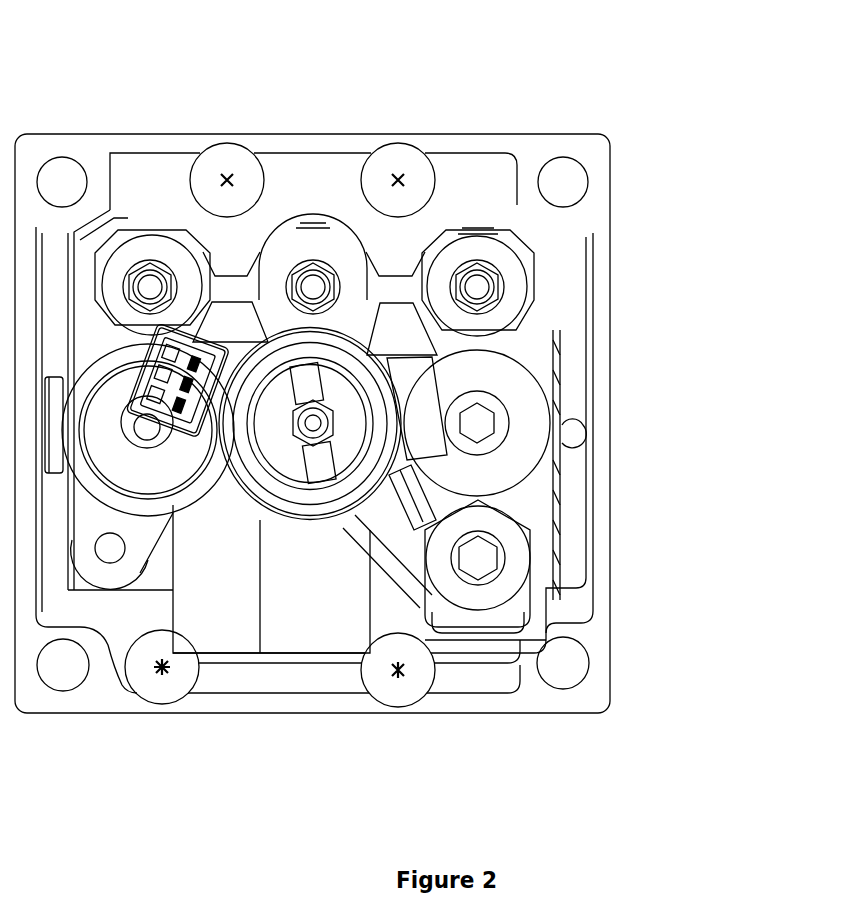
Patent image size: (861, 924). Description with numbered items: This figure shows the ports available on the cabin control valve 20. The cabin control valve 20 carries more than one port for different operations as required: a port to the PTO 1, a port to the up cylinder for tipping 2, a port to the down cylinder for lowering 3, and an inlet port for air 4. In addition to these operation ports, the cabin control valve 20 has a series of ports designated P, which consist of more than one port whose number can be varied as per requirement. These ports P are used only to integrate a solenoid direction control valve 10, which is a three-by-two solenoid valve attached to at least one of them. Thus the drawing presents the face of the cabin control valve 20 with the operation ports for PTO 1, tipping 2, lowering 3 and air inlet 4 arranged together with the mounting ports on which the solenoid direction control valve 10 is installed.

The PTO port 1 is at (136, 246).
The up cylinder (tipping) port 2 is at (321, 247).
The down cylinder (lowering) port 3 is at (480, 247).
The inlet port for air 4 is at (493, 598).
The solenoid direction control valve 10 is at (409, 400).
The cabin control valve 20 is at (226, 625).